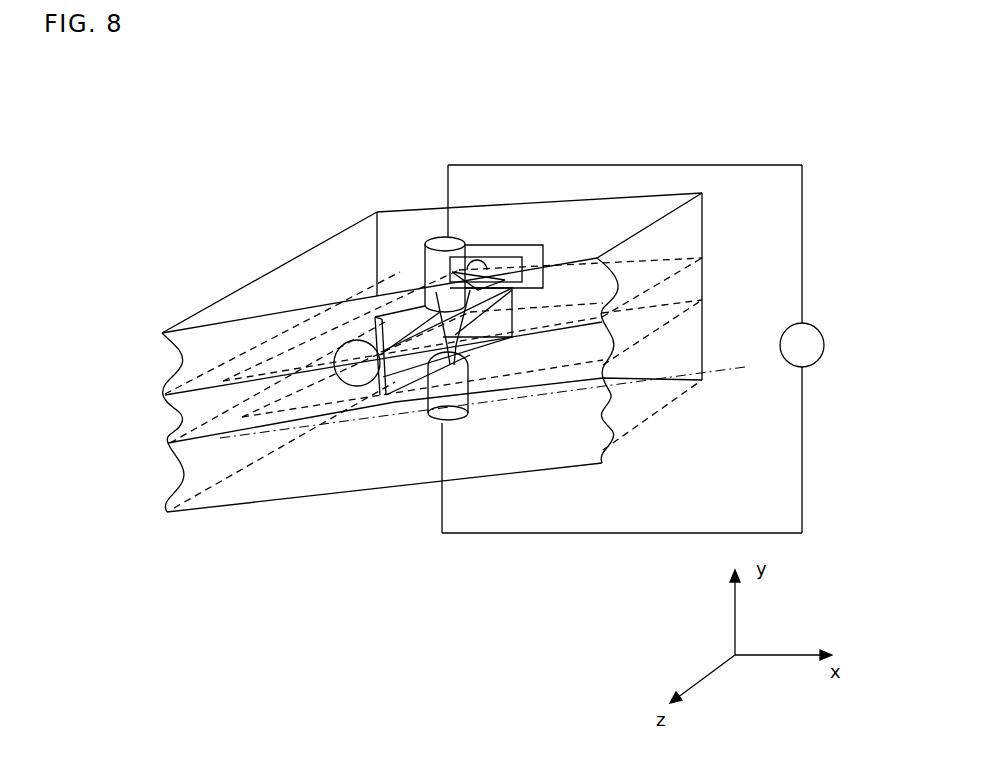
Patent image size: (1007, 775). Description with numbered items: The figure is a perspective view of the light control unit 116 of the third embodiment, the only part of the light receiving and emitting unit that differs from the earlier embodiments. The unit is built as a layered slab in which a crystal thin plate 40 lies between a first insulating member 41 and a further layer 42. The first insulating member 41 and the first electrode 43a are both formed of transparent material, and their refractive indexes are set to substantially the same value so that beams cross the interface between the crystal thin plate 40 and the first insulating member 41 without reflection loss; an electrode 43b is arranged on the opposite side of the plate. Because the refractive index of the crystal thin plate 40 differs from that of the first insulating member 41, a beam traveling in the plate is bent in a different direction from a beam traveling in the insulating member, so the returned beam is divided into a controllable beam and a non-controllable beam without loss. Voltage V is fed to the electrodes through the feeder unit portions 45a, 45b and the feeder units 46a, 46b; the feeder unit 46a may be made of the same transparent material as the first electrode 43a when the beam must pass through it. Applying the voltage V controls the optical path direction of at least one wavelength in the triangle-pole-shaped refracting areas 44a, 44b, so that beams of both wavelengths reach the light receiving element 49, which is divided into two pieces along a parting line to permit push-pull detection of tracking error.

The light control unit 116 is at (172, 137).
The crystal thin plate 40 is at (165, 413).
The first insulating member 41 is at (168, 348).
The lower layer 42 is at (170, 468).
The first electrode 43a is at (268, 353).
The second plate electrode 43b is at (248, 413).
The refracting area 44a is at (357, 398).
The refracting area 44b is at (606, 340).
The first cylindrical electrode 45a is at (437, 240).
The second cylindrical electrode 45b is at (436, 422).
The feeder unit 46a is at (427, 243).
The second conical tip 46b is at (470, 385).
The light receiving element 49 is at (522, 250).
The voltage source V is at (537, 383).